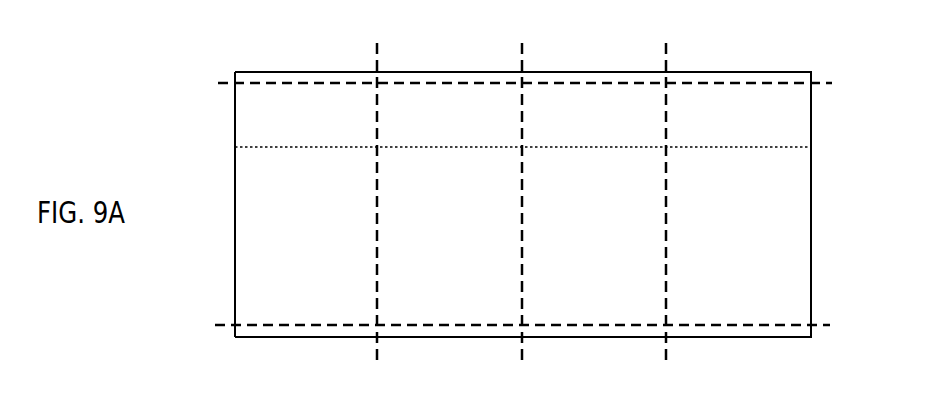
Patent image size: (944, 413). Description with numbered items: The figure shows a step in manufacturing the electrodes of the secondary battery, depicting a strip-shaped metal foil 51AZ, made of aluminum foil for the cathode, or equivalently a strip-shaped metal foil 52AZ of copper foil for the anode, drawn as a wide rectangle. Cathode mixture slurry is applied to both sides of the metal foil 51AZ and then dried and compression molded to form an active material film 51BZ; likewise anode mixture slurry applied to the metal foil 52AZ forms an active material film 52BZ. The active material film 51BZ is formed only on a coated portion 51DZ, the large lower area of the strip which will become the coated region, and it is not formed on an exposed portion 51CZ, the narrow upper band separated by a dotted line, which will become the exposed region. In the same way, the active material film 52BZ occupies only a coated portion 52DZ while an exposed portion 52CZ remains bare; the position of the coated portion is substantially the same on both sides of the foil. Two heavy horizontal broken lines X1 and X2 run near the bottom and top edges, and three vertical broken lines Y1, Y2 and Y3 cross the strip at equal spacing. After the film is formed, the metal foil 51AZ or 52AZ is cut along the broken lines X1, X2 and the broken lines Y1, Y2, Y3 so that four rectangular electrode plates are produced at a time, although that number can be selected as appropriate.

The metal foil 51AZ is at (590, 110).
The metal foil 52AZ is at (523, 76).
The active material film 51BZ is at (297, 306).
The active material film 52BZ is at (523, 280).
The exposed portion 51CZ is at (201, 76).
The exposed portion 52CZ is at (469, 111).
The coated portion 51DZ is at (201, 152).
The coated portion 52DZ is at (181, 242).
The broken line X1 is at (704, 327).
The broken line X2 is at (703, 84).
The broken line Y1 is at (666, 345).
The broken line Y2 is at (522, 345).
The broken line Y3 is at (378, 345).